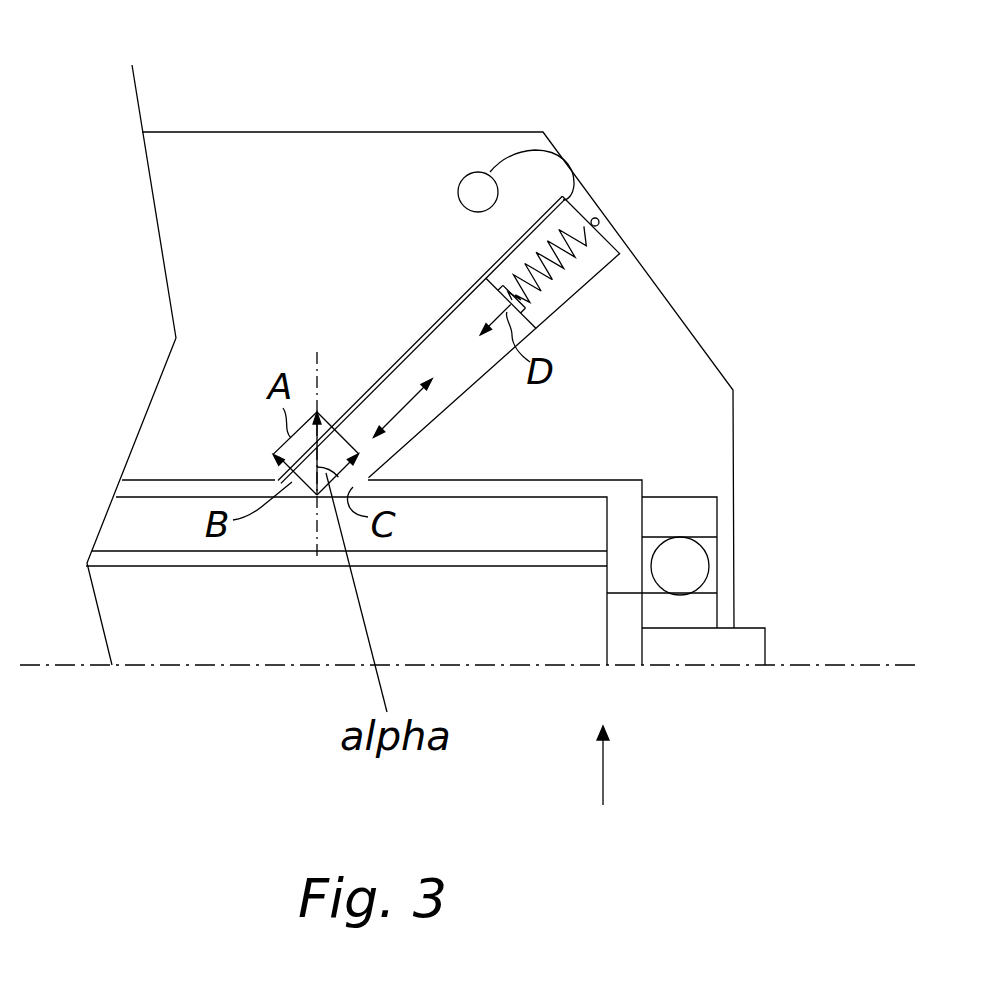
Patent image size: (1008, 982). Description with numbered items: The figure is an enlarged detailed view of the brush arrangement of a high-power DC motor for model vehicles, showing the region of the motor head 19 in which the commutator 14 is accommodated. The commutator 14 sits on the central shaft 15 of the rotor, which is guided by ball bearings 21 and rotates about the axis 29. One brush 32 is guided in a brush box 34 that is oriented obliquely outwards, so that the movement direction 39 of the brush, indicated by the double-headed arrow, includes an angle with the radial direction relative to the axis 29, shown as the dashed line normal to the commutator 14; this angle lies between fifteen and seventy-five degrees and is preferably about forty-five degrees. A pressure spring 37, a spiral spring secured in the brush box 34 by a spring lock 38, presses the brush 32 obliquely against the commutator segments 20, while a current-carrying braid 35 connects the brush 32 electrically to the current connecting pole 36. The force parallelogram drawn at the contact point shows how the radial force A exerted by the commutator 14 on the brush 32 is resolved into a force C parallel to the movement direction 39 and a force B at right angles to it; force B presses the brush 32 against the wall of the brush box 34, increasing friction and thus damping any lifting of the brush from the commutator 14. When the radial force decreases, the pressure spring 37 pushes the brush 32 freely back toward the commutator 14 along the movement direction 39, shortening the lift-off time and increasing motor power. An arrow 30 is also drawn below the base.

The commutator 14 is at (484, 631).
The central shaft 15 is at (753, 642).
The motor head 19 is at (350, 131).
The commutator segments 20 is at (205, 643).
The ball bearings 21 is at (680, 563).
The axis 29 is at (705, 667).
The direction of movement 30 is at (604, 792).
The brush 32 is at (457, 400).
The brush box 34 is at (560, 308).
The current-carrying braid 35 is at (570, 153).
The current connecting pole 36 is at (478, 190).
The pressure spring 37 is at (560, 278).
The spring lock 38 is at (599, 221).
The movement direction 39 is at (407, 407).